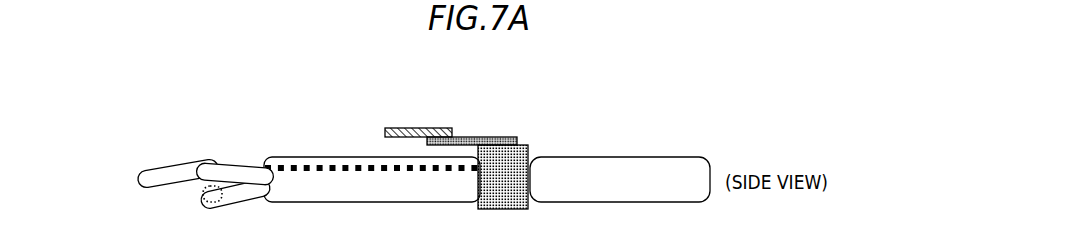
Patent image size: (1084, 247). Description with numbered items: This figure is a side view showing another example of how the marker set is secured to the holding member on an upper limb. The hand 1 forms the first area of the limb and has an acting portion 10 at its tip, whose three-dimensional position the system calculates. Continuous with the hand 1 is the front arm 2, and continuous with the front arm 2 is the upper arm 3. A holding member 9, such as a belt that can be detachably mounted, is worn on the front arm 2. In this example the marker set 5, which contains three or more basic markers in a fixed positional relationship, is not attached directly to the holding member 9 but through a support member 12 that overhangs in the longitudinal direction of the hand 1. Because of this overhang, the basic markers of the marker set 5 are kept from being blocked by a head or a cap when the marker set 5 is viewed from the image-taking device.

The hand 1 is at (220, 163).
The front arm 2 is at (293, 157).
The upper arm 3 is at (635, 157).
The marker set 5 is at (398, 127).
The holding member 9 is at (530, 148).
The acting portion 10 is at (223, 200).
The support member 12 is at (483, 137).